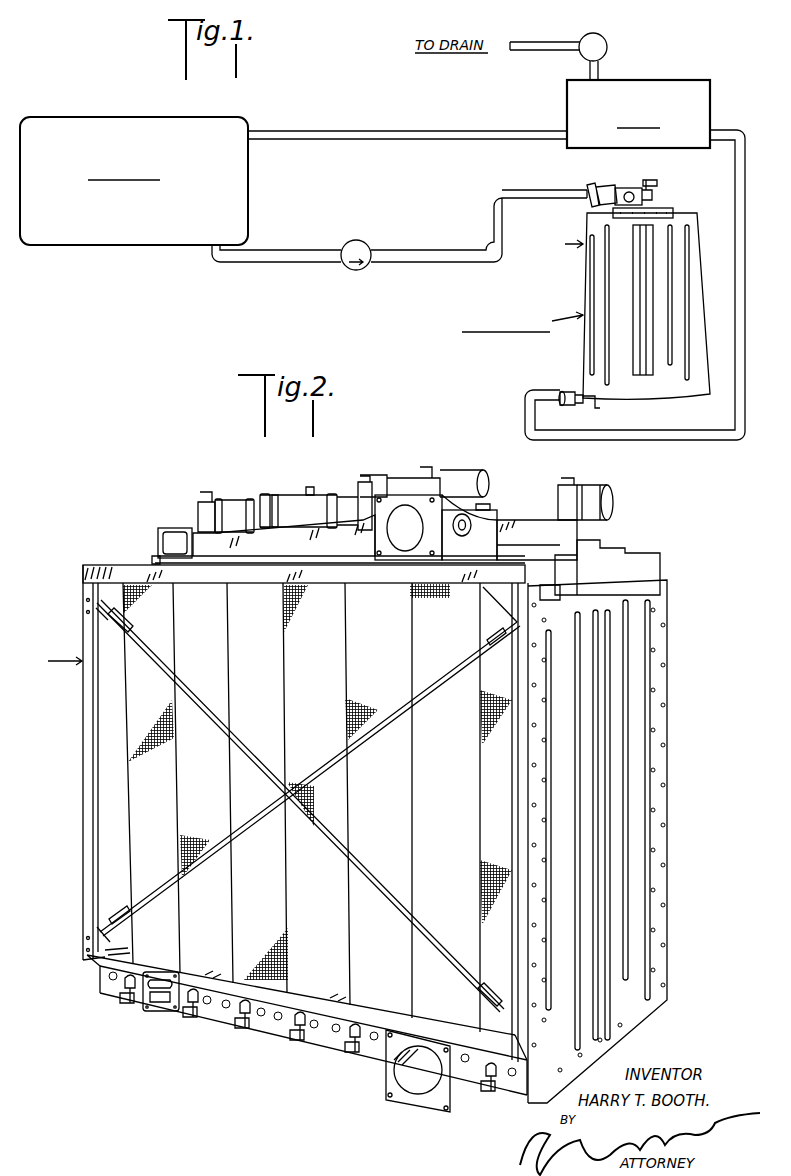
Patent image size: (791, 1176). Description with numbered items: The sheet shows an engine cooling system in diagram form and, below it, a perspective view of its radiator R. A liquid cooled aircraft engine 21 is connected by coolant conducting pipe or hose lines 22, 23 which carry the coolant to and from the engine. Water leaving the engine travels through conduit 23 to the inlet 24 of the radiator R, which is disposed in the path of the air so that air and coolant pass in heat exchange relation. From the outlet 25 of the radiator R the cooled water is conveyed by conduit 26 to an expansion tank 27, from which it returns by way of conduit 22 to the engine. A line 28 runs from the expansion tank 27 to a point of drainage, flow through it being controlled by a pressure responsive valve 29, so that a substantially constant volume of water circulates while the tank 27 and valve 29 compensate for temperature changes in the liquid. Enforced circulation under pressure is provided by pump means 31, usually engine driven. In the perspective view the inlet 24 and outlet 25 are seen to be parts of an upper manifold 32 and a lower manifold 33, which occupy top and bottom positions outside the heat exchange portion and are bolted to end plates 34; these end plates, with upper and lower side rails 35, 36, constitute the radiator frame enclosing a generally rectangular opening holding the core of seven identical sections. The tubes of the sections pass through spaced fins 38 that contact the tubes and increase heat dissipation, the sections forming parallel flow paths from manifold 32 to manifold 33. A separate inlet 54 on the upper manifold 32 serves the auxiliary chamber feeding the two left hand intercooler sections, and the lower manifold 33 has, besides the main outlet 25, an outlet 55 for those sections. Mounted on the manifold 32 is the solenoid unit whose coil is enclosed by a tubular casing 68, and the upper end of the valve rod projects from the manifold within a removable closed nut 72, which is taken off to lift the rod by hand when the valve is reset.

In FIG. 1, the liquid cooled aircraft engine 21 is at (140, 104).
In FIG. 1, the coolant conducting pipe or hose line 22 is at (400, 131).
In FIG. 1, the coolant conducting pipe or hose line 23 is at (292, 251).
In FIG. 1, the inlet 24 is at (602, 172).
In FIG. 2, the inlet 24 is at (400, 515).
In FIG. 1, the outlet 25 is at (573, 392).
In FIG. 2, the outlet 25 is at (426, 1082).
In FIG. 1, the conduit 26 is at (690, 430).
In FIG. 1, the expansion tank 27 is at (699, 80).
In FIG. 1, the line 28 is at (533, 42).
In FIG. 1, the pressure responsive valve 29 is at (608, 43).
In FIG. 1, the pump means 31 is at (356, 270).
In FIG. 1, the upper manifold 32 is at (636, 185).
In FIG. 2, the upper manifold 32 is at (547, 515).
In FIG. 1, the lower manifold 33 is at (598, 406).
In FIG. 2, the lower manifold 33 is at (327, 1048).
In FIG. 2, the end plates 34 is at (85, 772).
In FIG. 2, the upper side rail 35 is at (108, 566).
In FIG. 2, the lower side rail 36 is at (100, 962).
In FIG. 2, the fins 38 is at (95, 602).
In FIG. 2, the inlet 54 is at (174, 526).
In FIG. 2, the outlet 55 is at (166, 1006).
In FIG. 2, the tubular casing 68 is at (283, 490).
In FIG. 2, the closed nut 72 is at (205, 492).
In FIG. 1, the radiator R is at (586, 303).